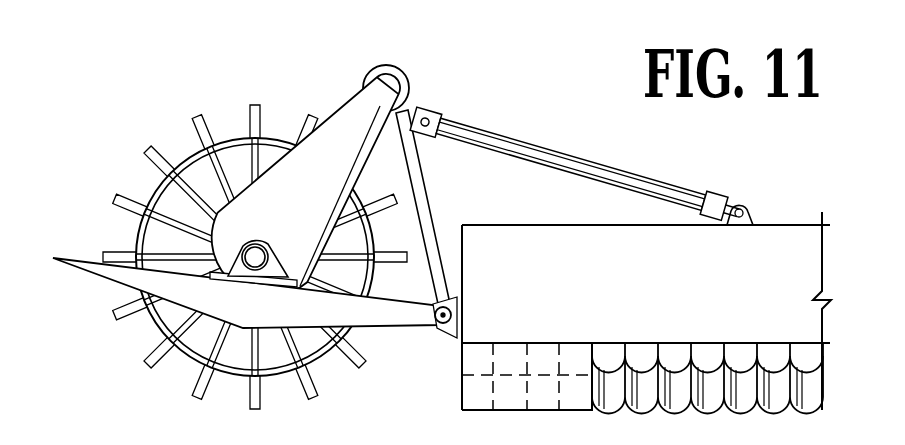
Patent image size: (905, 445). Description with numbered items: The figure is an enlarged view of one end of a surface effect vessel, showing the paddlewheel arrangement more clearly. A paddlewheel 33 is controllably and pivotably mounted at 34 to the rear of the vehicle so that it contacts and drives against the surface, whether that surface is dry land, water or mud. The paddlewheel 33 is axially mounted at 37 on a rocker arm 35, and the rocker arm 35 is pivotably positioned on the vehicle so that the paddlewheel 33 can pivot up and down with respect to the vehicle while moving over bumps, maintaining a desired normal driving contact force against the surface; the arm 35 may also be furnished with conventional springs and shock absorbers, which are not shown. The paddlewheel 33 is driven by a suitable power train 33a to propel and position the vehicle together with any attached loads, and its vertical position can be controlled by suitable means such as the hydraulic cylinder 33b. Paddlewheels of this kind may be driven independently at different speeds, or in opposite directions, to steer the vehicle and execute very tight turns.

The paddlewheel 33 is at (150, 183).
The power train 33a is at (355, 122).
The hydraulic cylinder 33b is at (482, 138).
The pivotable mounting 34 is at (436, 332).
The rocker arm 35 is at (108, 272).
The axial mounting 37 is at (248, 265).